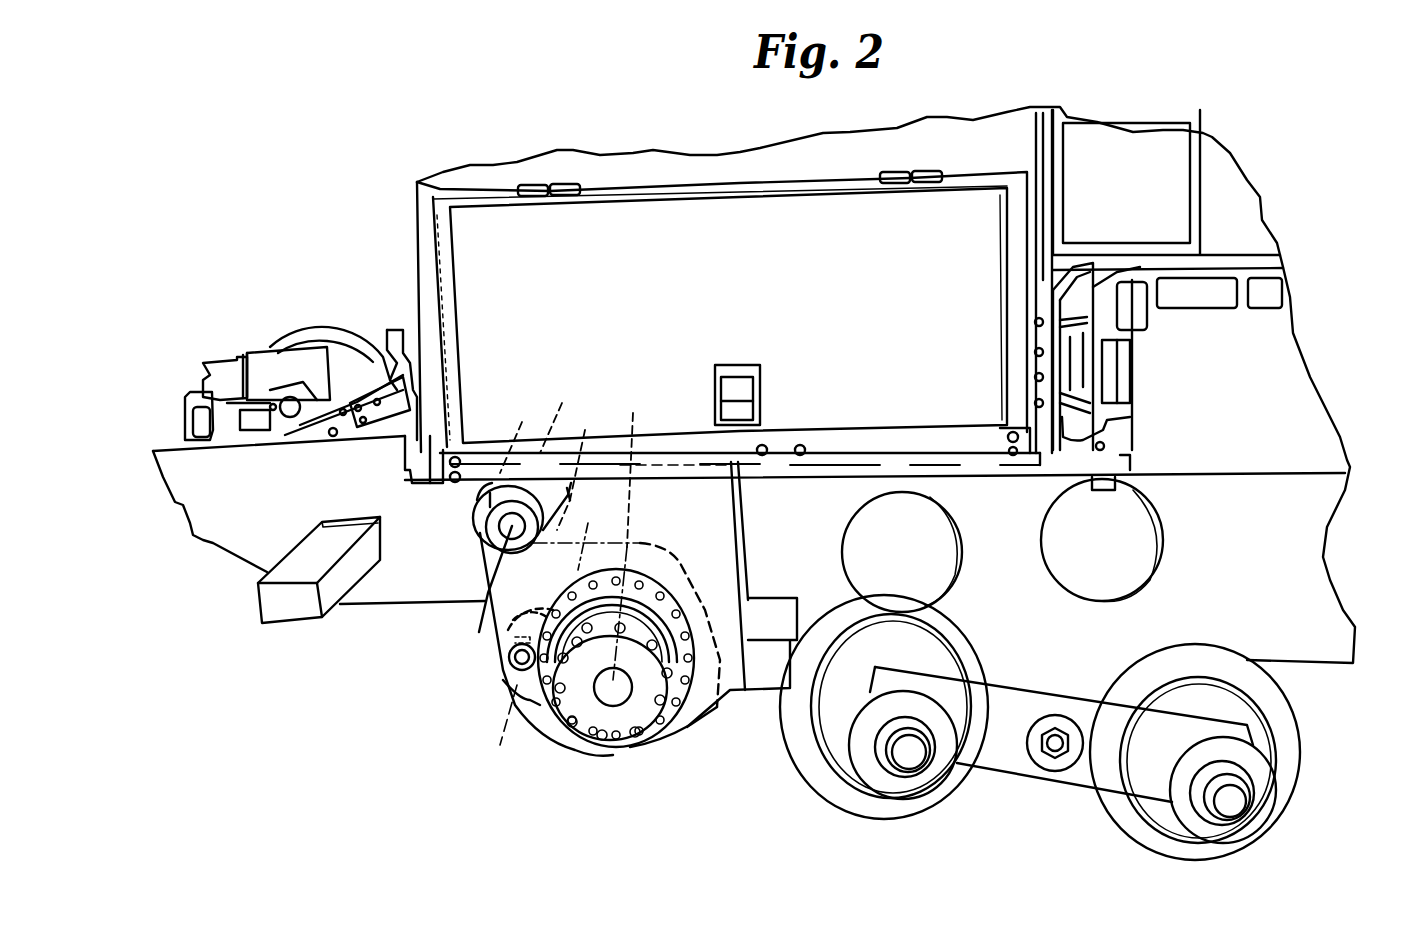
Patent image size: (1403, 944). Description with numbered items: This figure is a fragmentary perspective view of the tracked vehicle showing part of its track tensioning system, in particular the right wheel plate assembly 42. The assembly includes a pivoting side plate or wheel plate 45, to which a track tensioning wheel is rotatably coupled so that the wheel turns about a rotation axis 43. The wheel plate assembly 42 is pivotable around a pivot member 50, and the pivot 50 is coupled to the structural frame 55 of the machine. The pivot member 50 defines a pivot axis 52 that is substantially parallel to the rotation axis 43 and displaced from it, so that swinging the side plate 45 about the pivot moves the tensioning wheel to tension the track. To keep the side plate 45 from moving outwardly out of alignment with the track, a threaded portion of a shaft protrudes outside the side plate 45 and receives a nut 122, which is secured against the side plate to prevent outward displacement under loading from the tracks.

The pivot member 50 is at (480, 533).
The pivot axis 52 is at (480, 612).
The pivoting side plate 45 is at (503, 663).
The right wheel plate assembly 42 is at (503, 680).
The nut 122 is at (522, 670).
The rotation axis 43 is at (612, 683).
The structural frame 55 is at (928, 505).